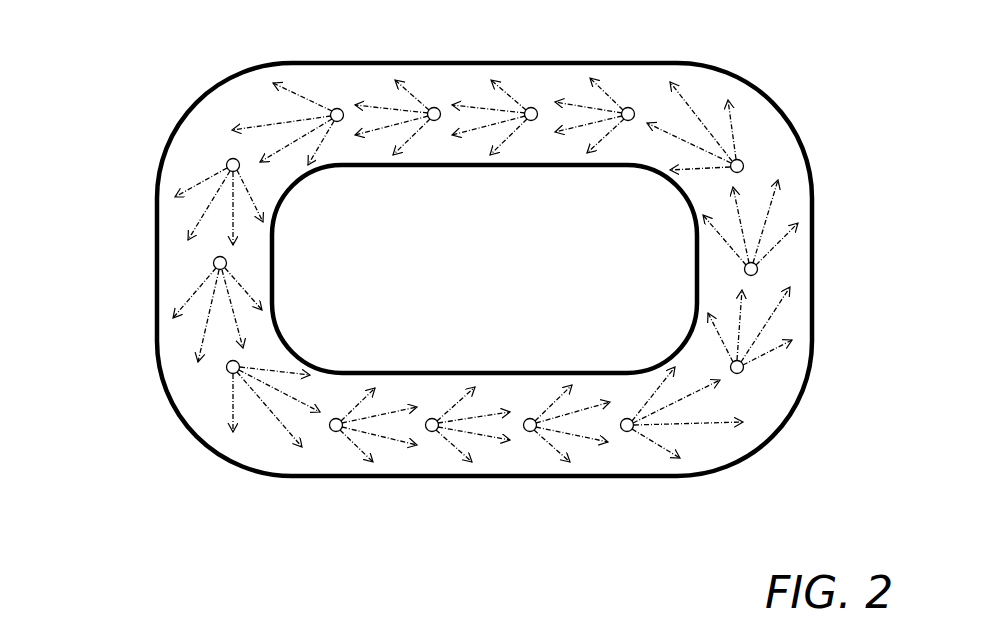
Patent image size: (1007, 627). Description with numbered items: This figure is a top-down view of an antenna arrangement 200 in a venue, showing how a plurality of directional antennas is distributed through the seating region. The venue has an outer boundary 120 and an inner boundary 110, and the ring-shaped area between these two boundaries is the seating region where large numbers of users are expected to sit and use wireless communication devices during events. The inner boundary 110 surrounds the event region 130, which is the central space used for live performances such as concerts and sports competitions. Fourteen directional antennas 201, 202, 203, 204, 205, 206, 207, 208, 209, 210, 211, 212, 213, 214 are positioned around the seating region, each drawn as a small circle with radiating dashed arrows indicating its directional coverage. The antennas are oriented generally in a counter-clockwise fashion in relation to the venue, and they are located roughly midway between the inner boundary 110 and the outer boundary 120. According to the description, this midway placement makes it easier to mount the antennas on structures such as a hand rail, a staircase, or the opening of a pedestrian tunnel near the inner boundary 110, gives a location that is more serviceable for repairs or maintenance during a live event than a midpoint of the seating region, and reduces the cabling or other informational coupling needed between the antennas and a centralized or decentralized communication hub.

The lighting device 200 is at (117, 52).
The outer boundary 120 is at (720, 75).
The inner boundary 110 is at (307, 180).
The event region 130 is at (435, 255).
The directional antenna 201 is at (228, 161).
The directional antenna 202 is at (335, 108).
The directional antenna 203 is at (434, 107).
The directional antenna 204 is at (532, 107).
The directional antenna 205 is at (631, 107).
The directional antenna 206 is at (742, 161).
The directional antenna 207 is at (759, 269).
The directional antenna 208 is at (744, 372).
The directional antenna 209 is at (630, 432).
The directional antenna 210 is at (531, 432).
The directional antenna 211 is at (432, 432).
The directional antenna 212 is at (335, 432).
The directional antenna 213 is at (228, 372).
The directional antenna 214 is at (213, 264).